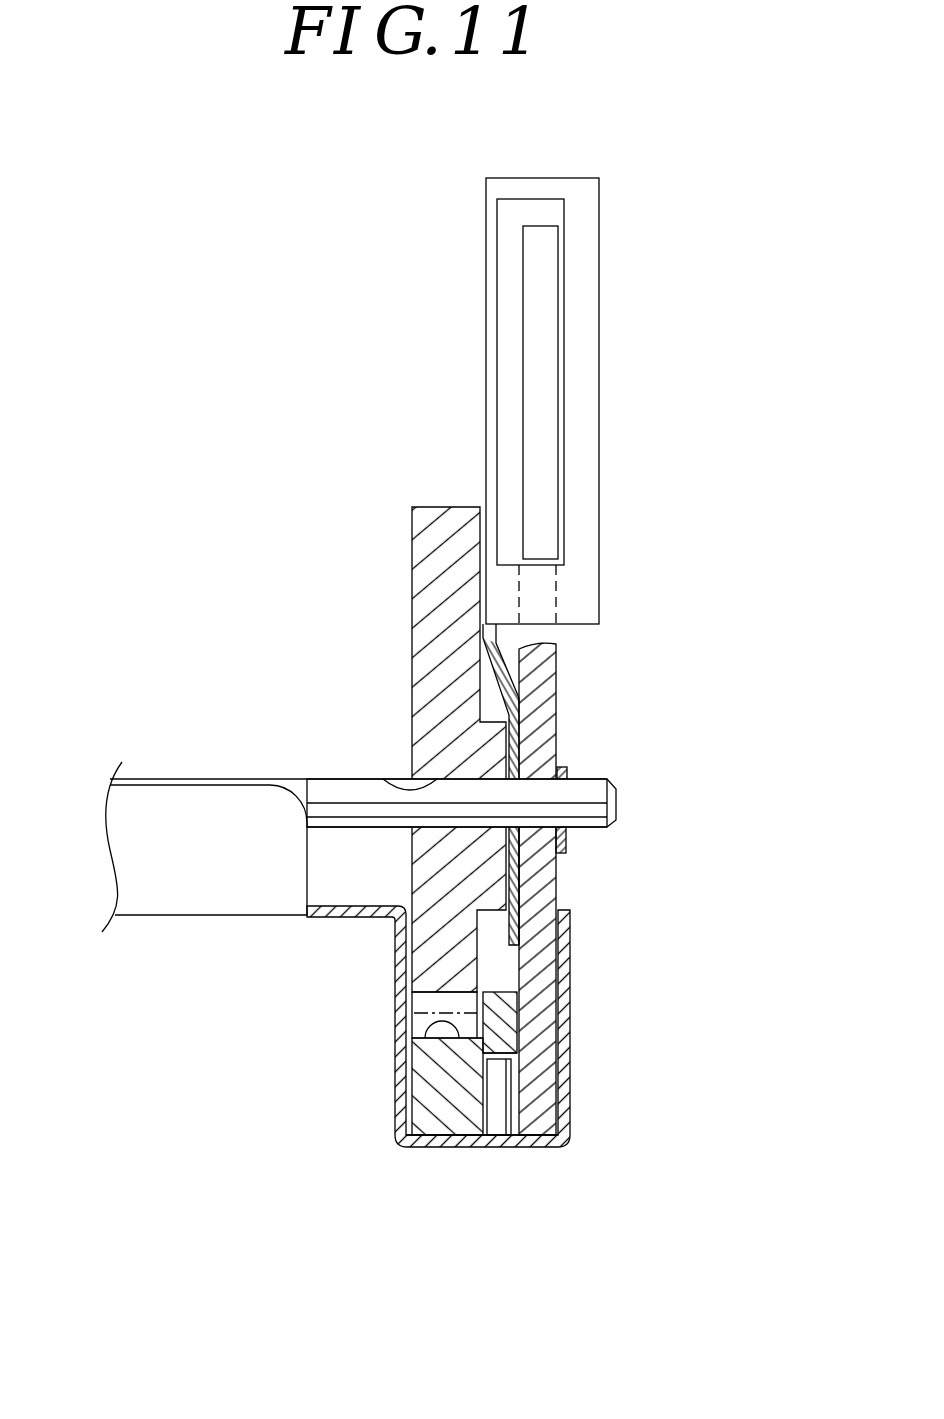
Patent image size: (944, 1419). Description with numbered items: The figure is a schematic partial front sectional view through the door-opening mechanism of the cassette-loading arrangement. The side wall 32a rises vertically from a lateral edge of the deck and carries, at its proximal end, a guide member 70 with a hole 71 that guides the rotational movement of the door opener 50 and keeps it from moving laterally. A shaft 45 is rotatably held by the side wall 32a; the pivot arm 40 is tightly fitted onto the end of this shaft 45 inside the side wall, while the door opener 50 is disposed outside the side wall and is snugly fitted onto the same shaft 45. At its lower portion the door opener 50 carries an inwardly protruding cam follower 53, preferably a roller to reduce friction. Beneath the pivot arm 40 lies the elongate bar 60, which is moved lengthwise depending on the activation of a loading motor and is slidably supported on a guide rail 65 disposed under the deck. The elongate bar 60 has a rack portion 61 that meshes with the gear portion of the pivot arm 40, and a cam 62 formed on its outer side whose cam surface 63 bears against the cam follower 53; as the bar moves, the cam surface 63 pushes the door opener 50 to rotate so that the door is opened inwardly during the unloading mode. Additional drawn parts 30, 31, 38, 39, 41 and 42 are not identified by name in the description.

The guide member 70 is at (585, 288).
The side wall 32a is at (492, 388).
The hole 71 is at (563, 425).
The pivot arm 40 is at (405, 606).
The recess 42 is at (392, 784).
The shaft 45 is at (342, 790).
The door opener 50 is at (566, 685).
The upper retaining portion 41 is at (567, 767).
The lower retaining portion 39 is at (555, 862).
The shield plate body portion 38 is at (530, 890).
The connector housing 30 is at (208, 918).
The cavity 31 is at (477, 1013).
The rack portion 61 is at (424, 1036).
The cam 62 is at (531, 1030).
The cam surface 63 is at (500, 1055).
The elongate bar 60 is at (406, 1155).
The guide rail 65 is at (468, 1142).
The cam follower 53 is at (500, 1128).